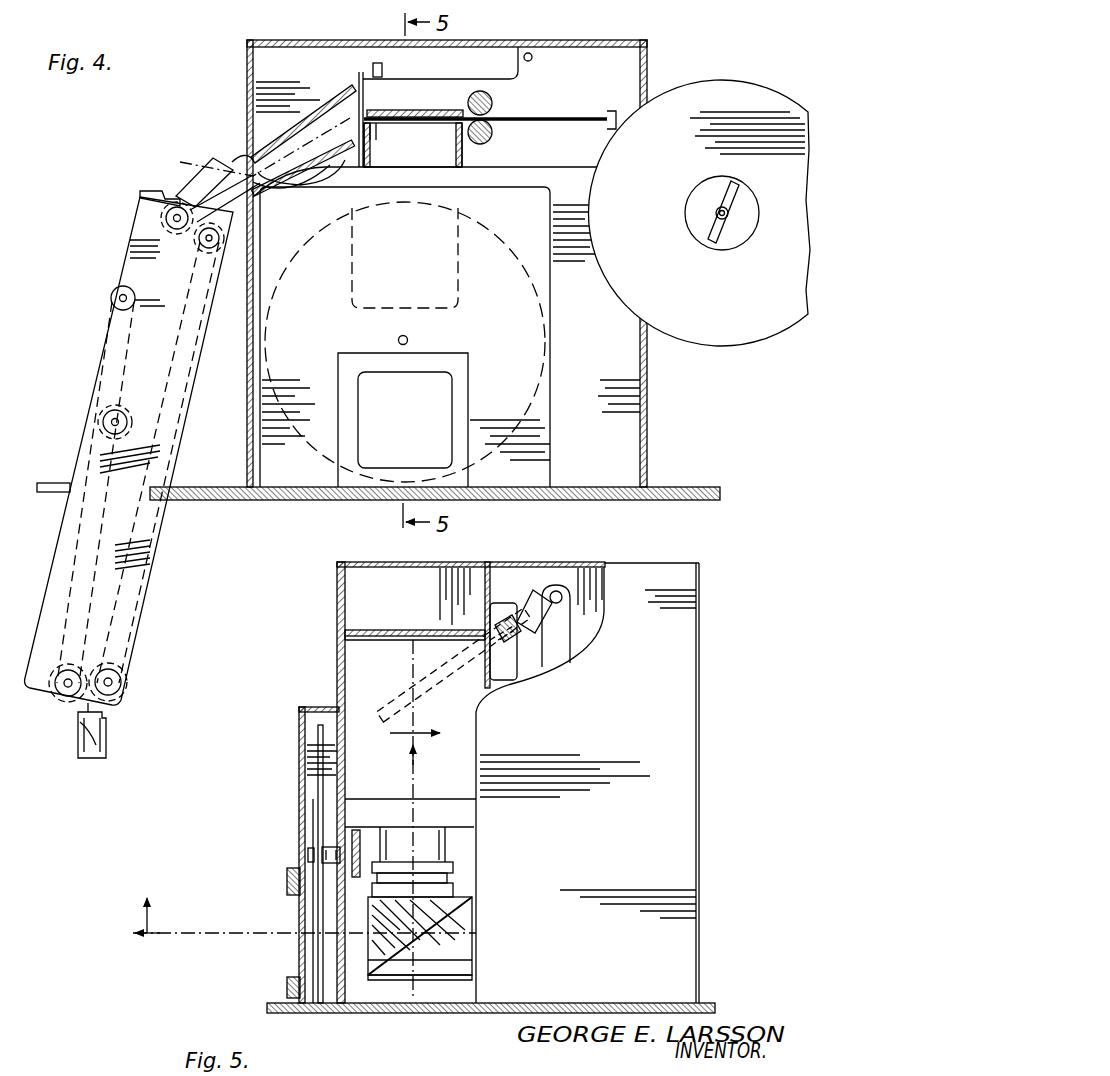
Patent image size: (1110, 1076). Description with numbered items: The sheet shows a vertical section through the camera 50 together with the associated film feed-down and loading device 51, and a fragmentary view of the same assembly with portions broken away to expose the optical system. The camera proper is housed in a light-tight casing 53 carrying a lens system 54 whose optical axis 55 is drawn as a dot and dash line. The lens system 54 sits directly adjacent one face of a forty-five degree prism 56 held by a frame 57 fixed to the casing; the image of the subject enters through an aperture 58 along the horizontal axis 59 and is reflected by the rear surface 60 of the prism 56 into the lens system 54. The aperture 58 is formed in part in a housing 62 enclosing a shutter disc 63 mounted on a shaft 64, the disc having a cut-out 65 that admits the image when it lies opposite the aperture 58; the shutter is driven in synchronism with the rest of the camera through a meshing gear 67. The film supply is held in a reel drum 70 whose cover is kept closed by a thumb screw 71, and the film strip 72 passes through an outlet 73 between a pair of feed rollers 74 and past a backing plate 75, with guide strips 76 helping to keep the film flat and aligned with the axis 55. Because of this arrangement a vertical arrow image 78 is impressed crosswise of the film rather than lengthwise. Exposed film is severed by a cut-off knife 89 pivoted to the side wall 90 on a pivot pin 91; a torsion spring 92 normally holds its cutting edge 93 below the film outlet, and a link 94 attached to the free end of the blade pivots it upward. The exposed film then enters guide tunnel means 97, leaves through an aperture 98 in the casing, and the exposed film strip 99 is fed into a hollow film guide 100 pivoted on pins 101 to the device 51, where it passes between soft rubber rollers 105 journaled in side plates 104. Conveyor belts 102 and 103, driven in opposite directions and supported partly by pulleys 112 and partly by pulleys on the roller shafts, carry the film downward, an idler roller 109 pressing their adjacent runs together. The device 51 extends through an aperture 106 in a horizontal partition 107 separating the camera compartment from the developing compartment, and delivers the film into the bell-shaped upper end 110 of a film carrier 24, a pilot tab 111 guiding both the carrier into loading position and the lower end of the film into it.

In FIG. 4, the film carrier 24 is at (108, 745).
In FIG. 4, the camera 50 is at (649, 398).
In FIG. 5, the camera 50 is at (700, 690).
In FIG. 4, the film feed-down and loading device 51 is at (110, 290).
In FIG. 4, the light-tight casing 53 is at (648, 452).
In FIG. 5, the light-tight casing 53 is at (700, 818).
In FIG. 5, the lens system 54 is at (455, 849).
In FIG. 5, the optical axis 55 is at (416, 770).
In FIG. 5, the prism 56 is at (440, 920).
In FIG. 5, the frame 57 is at (378, 980).
In FIG. 4, the aperture 58 is at (448, 390).
In FIG. 5, the aperture 58 is at (287, 986).
In FIG. 5, the horizontal axis 59 is at (195, 945).
In FIG. 5, the rear surface 60 is at (440, 960).
In FIG. 4, the housing 62 is at (545, 262).
In FIG. 5, the housing 62 is at (300, 855).
In FIG. 4, the shutter disc 63 is at (520, 423).
In FIG. 5, the shutter disc 63 is at (299, 808).
In FIG. 4, the shaft 64 is at (408, 338).
In FIG. 5, the shaft 64 is at (324, 866).
In FIG. 4, the cut-out 65 is at (455, 282).
In FIG. 5, the meshing gear 67 is at (356, 830).
In FIG. 4, the reel drum 70 is at (745, 88).
In FIG. 4, the thumb screw 71 is at (718, 235).
In FIG. 4, the film strip 72 is at (413, 115).
In FIG. 5, the film strip 72 is at (412, 628).
In FIG. 4, the outlet 73 is at (616, 110).
In FIG. 4, the feed rollers 74 is at (493, 104).
In FIG. 4, the backing plate 75 is at (445, 110).
In FIG. 5, the backing plate 75 is at (372, 628).
In FIG. 4, the guide strips 76 is at (374, 128).
In FIG. 5, the guide strips 76 is at (352, 641).
In FIG. 5, the vertical arrow image 78 is at (390, 730).
In FIG. 4, the cut-off knife 89 is at (350, 90).
In FIG. 5, the cut-off knife 89 is at (430, 684).
In FIG. 4, the side wall 90 is at (371, 155).
In FIG. 5, the side wall 90 is at (517, 660).
In FIG. 4, the pivot pin 91 is at (338, 146).
In FIG. 5, the pivot pin 91 is at (510, 655).
In FIG. 5, the torsion spring 92 is at (540, 600).
In FIG. 5, the cutting edge 93 is at (400, 690).
In FIG. 4, the link 94 is at (384, 70).
In FIG. 5, the link 94 is at (560, 619).
In FIG. 4, the guide tunnel means 97 is at (300, 190).
In FIG. 4, the aperture 98 is at (252, 158).
In FIG. 4, the exposed film strip 99 is at (262, 205).
In FIG. 4, the hollow film guide 100 is at (200, 172).
In FIG. 4, the pins 101 is at (150, 196).
In FIG. 4, the conveyor belt 102 is at (105, 333).
In FIG. 4, the conveyor belt 103 is at (150, 350).
In FIG. 4, the side plates 104 is at (140, 250).
In FIG. 4, the soft rubber rollers 105 is at (155, 226).
In FIG. 4, the aperture 106 is at (56, 483).
In FIG. 4, the horizontal partition 107 is at (212, 500).
In FIG. 5, the horizontal partition 107 is at (700, 1002).
In FIG. 4, the idler roller 109 is at (128, 416).
In FIG. 4, the bell-shaped upper end 110 is at (104, 718).
In FIG. 4, the pilot tab 111 is at (84, 740).
In FIG. 4, the pulleys 112 is at (110, 297).